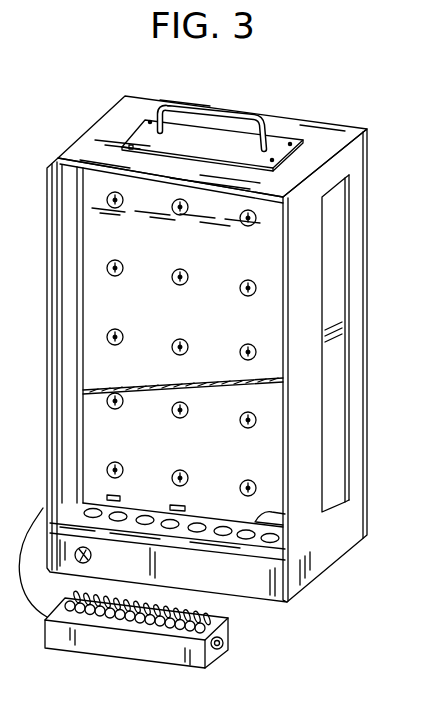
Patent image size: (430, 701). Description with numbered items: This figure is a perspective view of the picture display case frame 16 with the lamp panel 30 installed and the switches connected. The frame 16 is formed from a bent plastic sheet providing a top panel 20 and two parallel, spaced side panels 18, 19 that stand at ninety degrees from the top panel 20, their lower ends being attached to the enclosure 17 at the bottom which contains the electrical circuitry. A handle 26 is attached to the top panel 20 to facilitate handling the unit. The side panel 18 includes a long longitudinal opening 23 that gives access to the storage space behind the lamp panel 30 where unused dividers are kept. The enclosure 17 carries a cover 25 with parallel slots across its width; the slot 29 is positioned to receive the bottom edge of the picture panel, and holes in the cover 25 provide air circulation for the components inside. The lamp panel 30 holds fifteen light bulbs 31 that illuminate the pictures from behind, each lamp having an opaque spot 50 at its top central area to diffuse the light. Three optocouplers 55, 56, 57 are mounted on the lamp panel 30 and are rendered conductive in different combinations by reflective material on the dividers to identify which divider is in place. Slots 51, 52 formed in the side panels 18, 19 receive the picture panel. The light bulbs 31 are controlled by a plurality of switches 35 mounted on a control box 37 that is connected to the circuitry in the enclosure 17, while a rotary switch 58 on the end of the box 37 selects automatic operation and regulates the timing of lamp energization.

The frame 16 is at (363, 617).
The enclosure 17 is at (268, 598).
The side panel 18 is at (357, 512).
The side panel 19 is at (72, 227).
The top panel 20 is at (332, 138).
The longitudinal opening 23 is at (333, 318).
The cover 25 is at (195, 530).
The handle 26 is at (223, 113).
The slot 29 is at (252, 545).
The lamp panel 30 is at (237, 388).
The light bulbs 31 is at (121, 264).
The switches 35 is at (137, 637).
The control box 37 is at (181, 657).
The opaque spot 50 is at (243, 293).
The slot 51 is at (274, 221).
The slot 52 is at (68, 295).
The optocoupler 55 is at (119, 496).
The optocoupler 56 is at (187, 505).
The optocoupler 57 is at (270, 516).
The rotary switch 58 is at (230, 645).